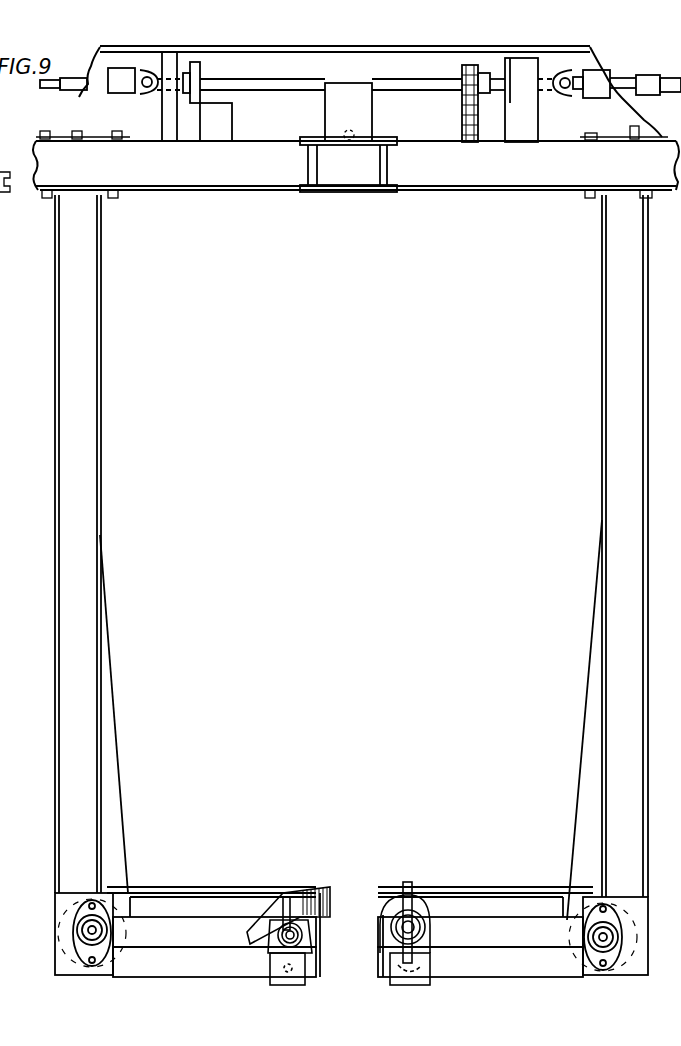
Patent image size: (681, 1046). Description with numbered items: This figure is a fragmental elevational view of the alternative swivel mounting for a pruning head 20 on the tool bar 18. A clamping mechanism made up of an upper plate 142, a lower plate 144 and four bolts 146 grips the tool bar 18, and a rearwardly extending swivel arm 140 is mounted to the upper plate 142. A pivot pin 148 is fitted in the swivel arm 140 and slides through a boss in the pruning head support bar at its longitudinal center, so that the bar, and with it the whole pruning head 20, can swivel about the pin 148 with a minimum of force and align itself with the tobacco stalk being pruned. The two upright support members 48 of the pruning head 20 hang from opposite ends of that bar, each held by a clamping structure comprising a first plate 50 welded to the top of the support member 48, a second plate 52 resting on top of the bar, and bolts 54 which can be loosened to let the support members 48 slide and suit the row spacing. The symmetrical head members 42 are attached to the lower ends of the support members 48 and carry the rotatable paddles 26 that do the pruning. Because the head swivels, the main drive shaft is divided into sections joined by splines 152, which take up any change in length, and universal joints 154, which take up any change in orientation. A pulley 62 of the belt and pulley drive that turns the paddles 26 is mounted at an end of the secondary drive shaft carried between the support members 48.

The tool bar 18 is at (473, 176).
The pruning head 20 is at (345, 797).
The paddle 26 is at (410, 880).
The head member 42 is at (180, 875).
The support member 48 is at (85, 317).
The first plate 50 is at (633, 184).
The second plate 52 is at (605, 140).
The bolt 54 is at (586, 138).
The pulley 62 is at (11, 196).
The swivel arm 140 is at (325, 100).
The upper plate 142 is at (375, 137).
The plate 144 is at (378, 193).
The bolt 146 is at (308, 165).
The pivot pin 148 is at (350, 143).
The spline 152 is at (92, 90).
The universal joint 154 is at (145, 110).